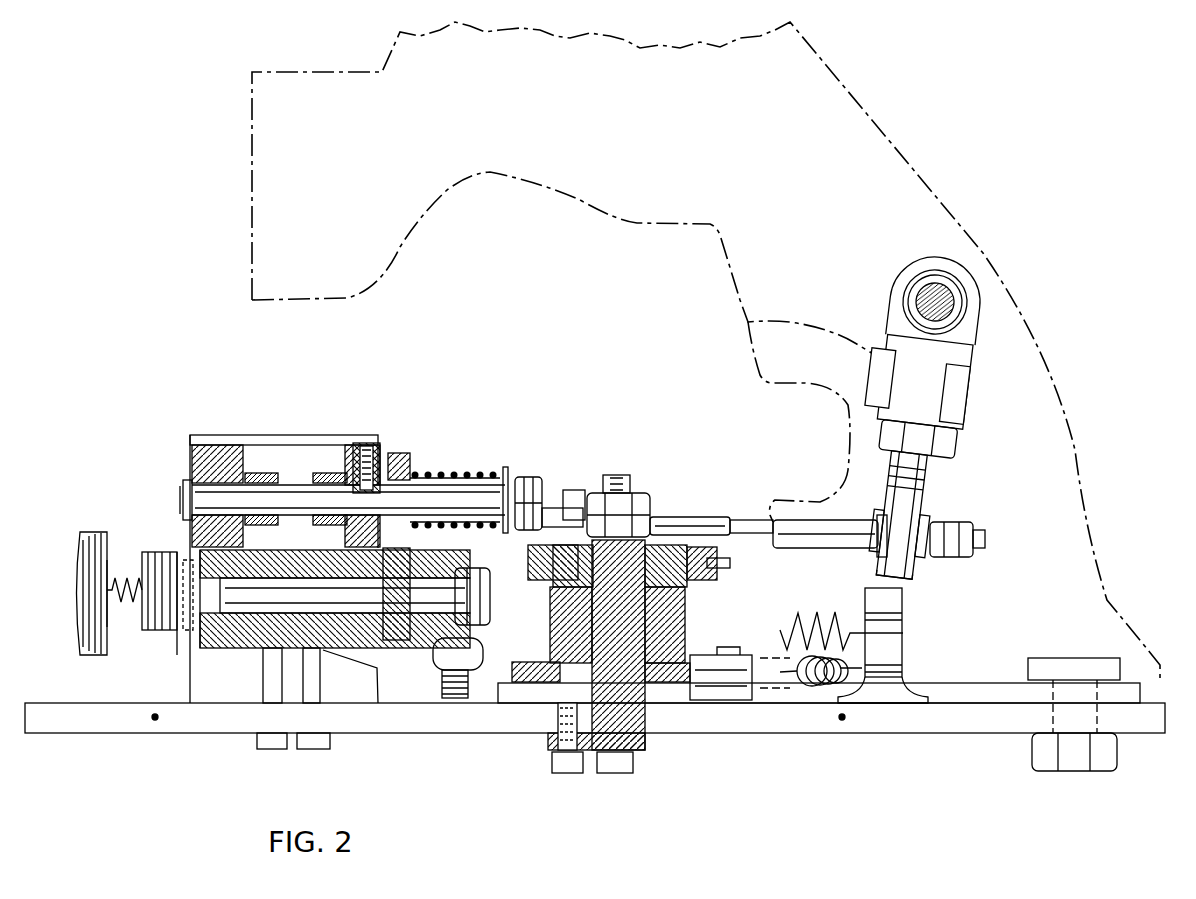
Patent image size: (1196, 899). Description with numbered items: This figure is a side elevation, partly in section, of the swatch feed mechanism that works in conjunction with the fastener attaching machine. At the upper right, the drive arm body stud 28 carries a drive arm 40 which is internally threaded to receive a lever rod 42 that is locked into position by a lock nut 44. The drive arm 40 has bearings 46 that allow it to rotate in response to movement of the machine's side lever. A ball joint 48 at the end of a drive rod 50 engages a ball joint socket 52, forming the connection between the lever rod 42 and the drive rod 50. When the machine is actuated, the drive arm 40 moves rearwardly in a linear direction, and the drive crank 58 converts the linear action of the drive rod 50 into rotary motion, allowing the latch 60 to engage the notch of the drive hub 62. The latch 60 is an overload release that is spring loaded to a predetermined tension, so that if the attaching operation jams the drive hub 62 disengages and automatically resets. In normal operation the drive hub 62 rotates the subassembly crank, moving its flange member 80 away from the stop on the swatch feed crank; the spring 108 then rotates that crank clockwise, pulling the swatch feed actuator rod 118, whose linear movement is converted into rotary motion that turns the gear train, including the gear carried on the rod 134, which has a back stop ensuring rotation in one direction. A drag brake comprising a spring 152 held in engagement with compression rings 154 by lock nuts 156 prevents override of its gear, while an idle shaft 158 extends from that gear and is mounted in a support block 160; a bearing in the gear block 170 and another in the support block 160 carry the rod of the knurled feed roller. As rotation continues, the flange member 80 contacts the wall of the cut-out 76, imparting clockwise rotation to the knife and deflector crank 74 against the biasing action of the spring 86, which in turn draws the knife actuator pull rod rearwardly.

The drive arm body stud 28 is at (940, 300).
The drive arm 40 is at (962, 357).
The lever rod 42 is at (927, 492).
The lock nut 44 is at (962, 442).
The bearings 46 is at (882, 518).
The ball joint 48 is at (930, 551).
The drive rod 50 is at (838, 549).
The ball joint socket 52 is at (910, 578).
The drive crank 58 is at (528, 555).
The latch 60 is at (735, 537).
The drive hub 62 is at (697, 585).
The knife and deflector crank 74 is at (687, 622).
The cut-out 76 is at (495, 695).
The flange member 80 is at (538, 662).
The spring 86 is at (815, 616).
The spring 108 is at (810, 690).
The swatch feed actuator rod 118 is at (470, 642).
The rod 134 is at (263, 642).
The spring 152 is at (505, 467).
The compression rings 154 is at (428, 472).
The lock nuts 156 is at (530, 478).
The idle shaft 158 is at (183, 495).
The support block 160 is at (192, 442).
The gear block 170 is at (368, 444).